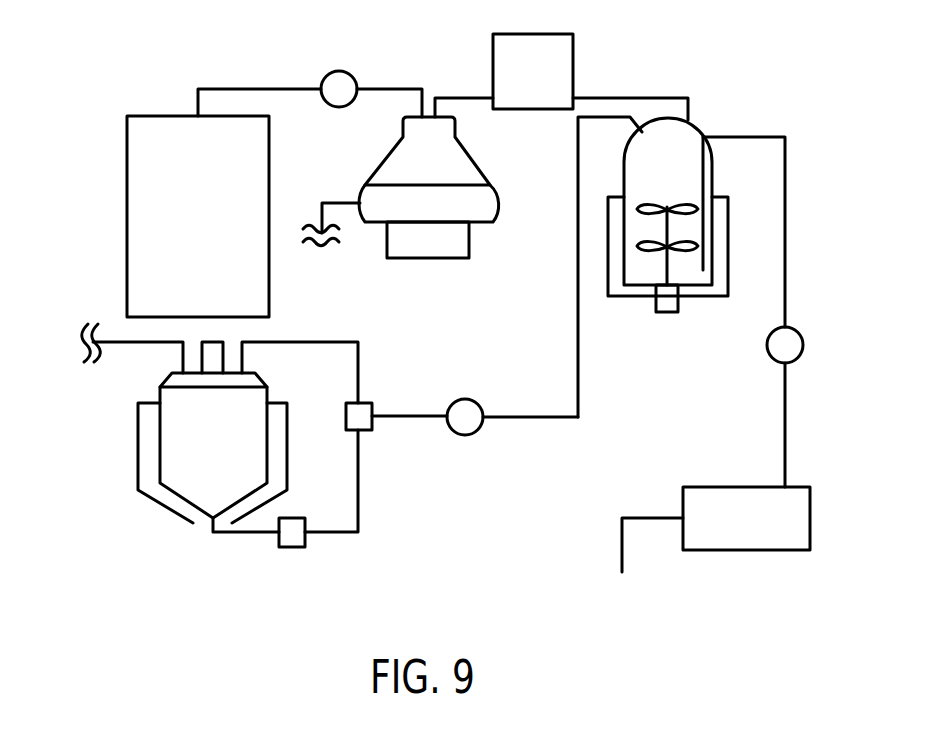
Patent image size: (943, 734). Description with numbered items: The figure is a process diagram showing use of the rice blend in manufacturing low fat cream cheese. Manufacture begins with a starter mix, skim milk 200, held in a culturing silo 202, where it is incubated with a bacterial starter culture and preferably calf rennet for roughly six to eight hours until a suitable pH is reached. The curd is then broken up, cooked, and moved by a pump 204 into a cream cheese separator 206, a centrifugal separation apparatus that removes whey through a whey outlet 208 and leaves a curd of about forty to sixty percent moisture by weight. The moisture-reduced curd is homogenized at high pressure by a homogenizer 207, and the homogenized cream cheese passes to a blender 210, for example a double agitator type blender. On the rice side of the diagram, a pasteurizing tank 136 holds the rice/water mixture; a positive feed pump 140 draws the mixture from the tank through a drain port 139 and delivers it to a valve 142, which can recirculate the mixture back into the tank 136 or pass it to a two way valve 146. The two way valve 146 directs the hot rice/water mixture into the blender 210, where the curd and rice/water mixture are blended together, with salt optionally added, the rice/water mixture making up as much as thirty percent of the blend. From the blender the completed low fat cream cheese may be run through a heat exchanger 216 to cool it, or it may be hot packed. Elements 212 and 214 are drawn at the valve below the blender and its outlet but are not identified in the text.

The pasteurizing tank 136 is at (84, 425).
The drain port 139 is at (207, 532).
The positive feed pump 140 is at (292, 547).
The valve 142 is at (367, 400).
The two way valve 146 is at (465, 435).
The skim milk 200 is at (218, 222).
The culturing silo 202 is at (127, 218).
The pump 204 is at (339, 92).
The cream cheese separator 206 is at (458, 172).
The homogenizer 207 is at (573, 72).
The whey outlet 208 is at (343, 197).
The blender 210 is at (700, 125).
The valve 212 is at (803, 343).
The vessel outlet 214 is at (697, 292).
The heat exchanger 216 is at (810, 518).